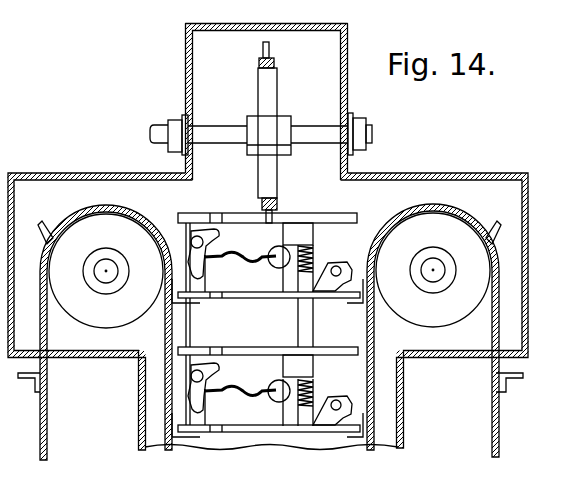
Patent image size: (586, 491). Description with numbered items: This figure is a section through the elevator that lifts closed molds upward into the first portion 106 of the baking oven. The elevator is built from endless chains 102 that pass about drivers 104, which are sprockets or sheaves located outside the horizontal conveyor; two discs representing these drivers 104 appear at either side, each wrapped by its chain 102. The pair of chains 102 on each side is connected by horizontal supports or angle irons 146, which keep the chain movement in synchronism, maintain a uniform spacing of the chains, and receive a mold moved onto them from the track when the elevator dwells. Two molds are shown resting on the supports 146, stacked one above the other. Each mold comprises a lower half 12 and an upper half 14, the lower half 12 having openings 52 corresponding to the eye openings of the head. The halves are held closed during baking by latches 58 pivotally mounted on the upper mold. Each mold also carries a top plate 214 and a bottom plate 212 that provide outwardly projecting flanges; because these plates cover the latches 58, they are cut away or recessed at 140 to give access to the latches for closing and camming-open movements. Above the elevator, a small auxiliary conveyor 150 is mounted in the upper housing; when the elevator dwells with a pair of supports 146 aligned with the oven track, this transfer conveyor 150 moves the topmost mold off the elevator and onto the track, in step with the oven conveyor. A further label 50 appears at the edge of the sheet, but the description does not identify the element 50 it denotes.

The lower half 12 is at (258, 278).
The upper half 14 is at (251, 222).
The shaft 50 is at (10, 76).
The openings 52 is at (10, 43).
The latches 58 is at (219, 237).
The elevator chains 102 is at (167, 403).
The drivers 104 is at (482, 273).
The first portion of baking oven 106 is at (405, 428).
The recess 140 is at (217, 213).
The horizontal supports 146 is at (490, 222).
The auxiliary conveyor 150 is at (269, 50).
The bottom plate 212 is at (295, 294).
The top plate 214 is at (295, 218).